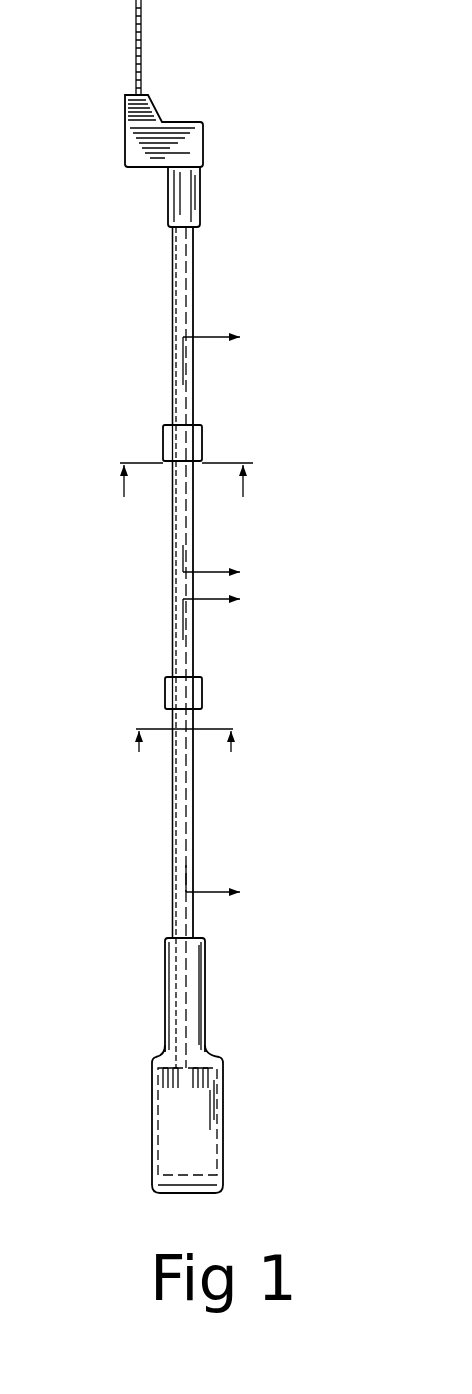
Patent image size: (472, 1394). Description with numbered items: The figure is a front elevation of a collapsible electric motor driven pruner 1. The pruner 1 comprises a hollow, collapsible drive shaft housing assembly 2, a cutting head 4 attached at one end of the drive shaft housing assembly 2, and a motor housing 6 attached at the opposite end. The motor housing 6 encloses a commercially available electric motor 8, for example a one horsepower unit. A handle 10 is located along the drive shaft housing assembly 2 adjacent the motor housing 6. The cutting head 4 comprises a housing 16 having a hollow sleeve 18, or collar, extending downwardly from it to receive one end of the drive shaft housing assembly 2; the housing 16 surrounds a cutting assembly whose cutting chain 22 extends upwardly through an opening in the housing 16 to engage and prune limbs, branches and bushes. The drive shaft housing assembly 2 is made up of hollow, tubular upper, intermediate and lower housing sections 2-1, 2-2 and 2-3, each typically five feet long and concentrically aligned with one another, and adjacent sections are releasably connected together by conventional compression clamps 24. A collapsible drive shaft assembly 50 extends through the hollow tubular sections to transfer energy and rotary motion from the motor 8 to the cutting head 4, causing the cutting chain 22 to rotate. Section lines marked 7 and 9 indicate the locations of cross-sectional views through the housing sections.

The pruner 1 is at (147, 826).
The drive shaft housing assembly 2 is at (172, 375).
The upper housing section 2-1 is at (172, 298).
The intermediate housing section 2-2 is at (173, 634).
The lower housing section 2-3 is at (172, 893).
The cutting head 4 is at (166, 135).
The motor housing 6 is at (223, 1080).
The section line 7- 7 is at (184, 496).
The motor 8 is at (290, 1122).
The inner conductor 9 is at (223, 455).
The handle 10 is at (196, 1000).
The housing 16 is at (137, 148).
The hollow sleeve 18 is at (192, 198).
The cutting chain 22 is at (141, 30).
The compression clamps 24 is at (192, 440).
The collapsible drive shaft assembly 50 is at (192, 793).